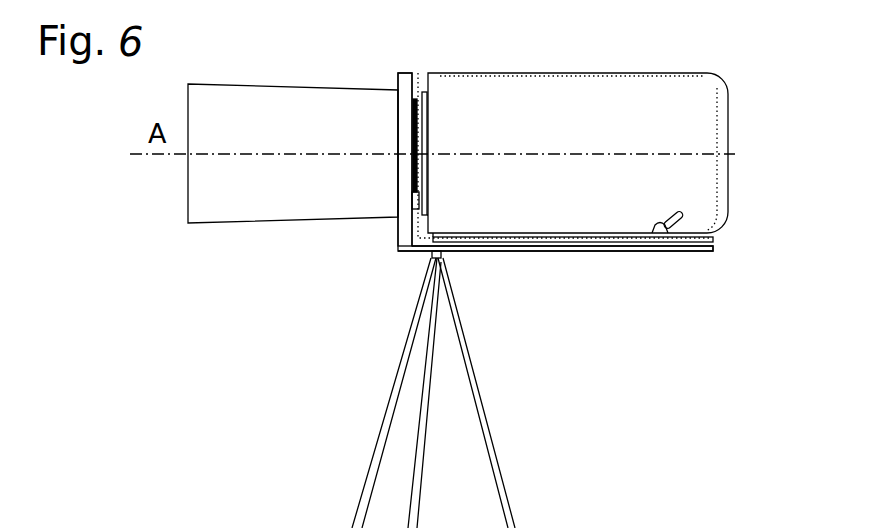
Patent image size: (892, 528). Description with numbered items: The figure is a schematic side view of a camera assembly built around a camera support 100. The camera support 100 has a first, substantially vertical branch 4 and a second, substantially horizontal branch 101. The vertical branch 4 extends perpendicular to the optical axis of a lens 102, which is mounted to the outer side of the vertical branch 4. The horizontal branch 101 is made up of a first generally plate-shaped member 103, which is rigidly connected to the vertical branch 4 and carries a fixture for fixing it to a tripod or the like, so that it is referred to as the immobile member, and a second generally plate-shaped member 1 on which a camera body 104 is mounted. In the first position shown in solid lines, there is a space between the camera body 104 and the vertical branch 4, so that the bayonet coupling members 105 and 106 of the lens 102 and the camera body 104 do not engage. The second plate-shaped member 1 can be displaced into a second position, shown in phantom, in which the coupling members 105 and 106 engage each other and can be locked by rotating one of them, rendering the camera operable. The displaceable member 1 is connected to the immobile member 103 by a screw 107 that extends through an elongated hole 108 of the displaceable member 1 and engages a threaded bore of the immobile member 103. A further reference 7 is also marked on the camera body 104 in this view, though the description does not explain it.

The second plate-shaped member 1 is at (688, 243).
The first, substantially vertical branch 4 is at (402, 84).
The housing 7 is at (707, 190).
The camera support 100 is at (390, 241).
The second, substantially horizontal branch 101 is at (503, 257).
The lens 102 is at (220, 212).
The first generally plate-shaped member 103 is at (597, 249).
The camera body 104 is at (634, 123).
The bayonet coupling member 105 is at (413, 133).
The bayonet coupling member 106 is at (427, 102).
The screw 107 is at (662, 226).
The elongated hole 108 is at (667, 243).